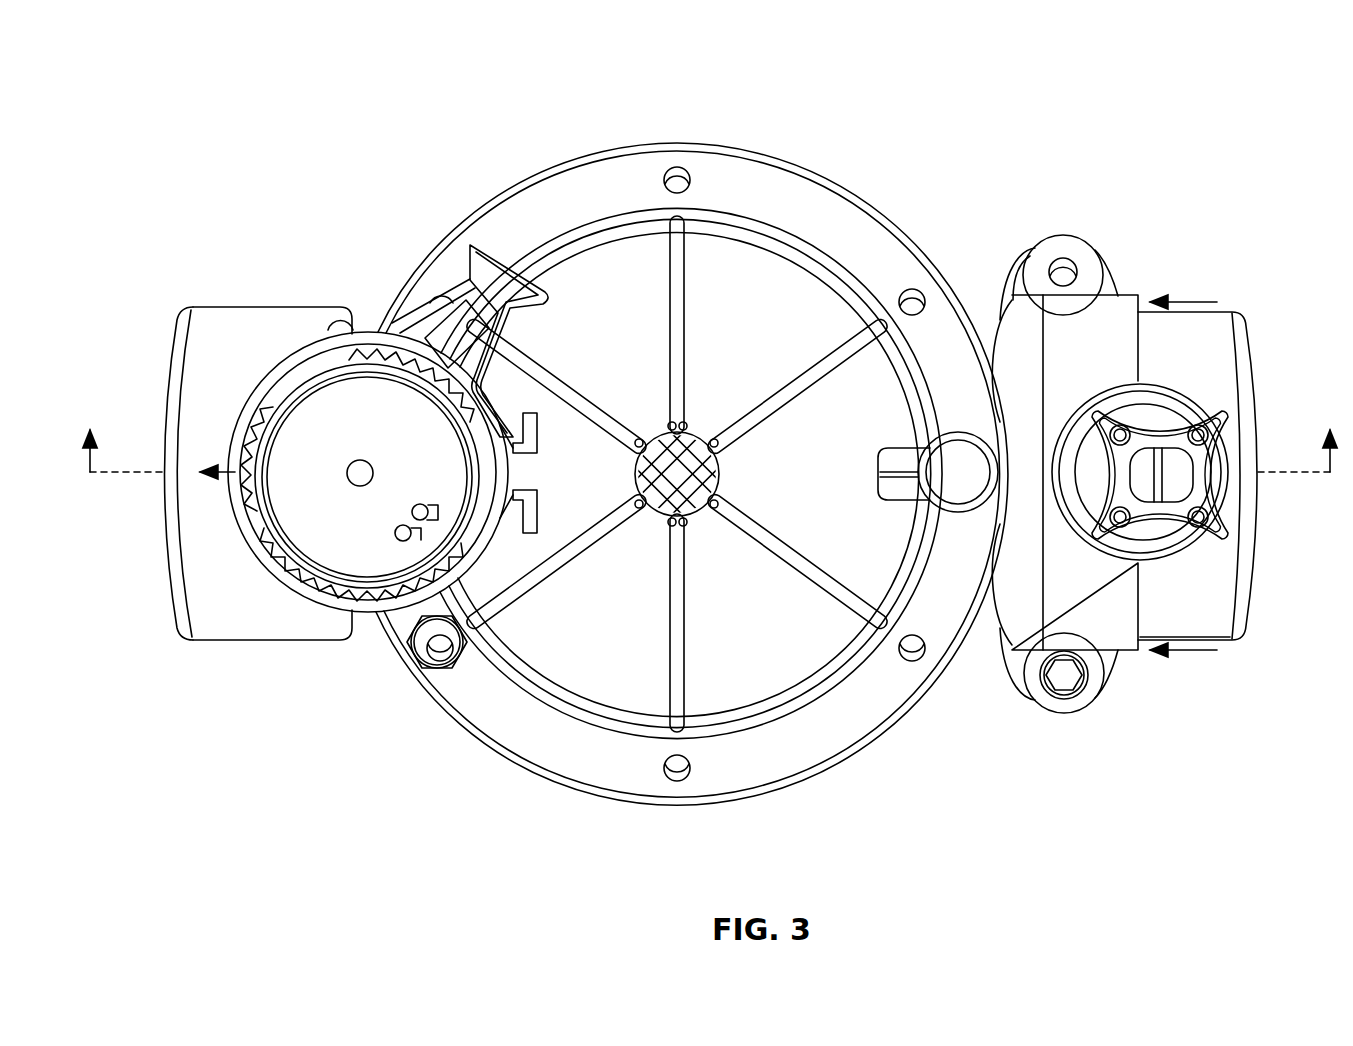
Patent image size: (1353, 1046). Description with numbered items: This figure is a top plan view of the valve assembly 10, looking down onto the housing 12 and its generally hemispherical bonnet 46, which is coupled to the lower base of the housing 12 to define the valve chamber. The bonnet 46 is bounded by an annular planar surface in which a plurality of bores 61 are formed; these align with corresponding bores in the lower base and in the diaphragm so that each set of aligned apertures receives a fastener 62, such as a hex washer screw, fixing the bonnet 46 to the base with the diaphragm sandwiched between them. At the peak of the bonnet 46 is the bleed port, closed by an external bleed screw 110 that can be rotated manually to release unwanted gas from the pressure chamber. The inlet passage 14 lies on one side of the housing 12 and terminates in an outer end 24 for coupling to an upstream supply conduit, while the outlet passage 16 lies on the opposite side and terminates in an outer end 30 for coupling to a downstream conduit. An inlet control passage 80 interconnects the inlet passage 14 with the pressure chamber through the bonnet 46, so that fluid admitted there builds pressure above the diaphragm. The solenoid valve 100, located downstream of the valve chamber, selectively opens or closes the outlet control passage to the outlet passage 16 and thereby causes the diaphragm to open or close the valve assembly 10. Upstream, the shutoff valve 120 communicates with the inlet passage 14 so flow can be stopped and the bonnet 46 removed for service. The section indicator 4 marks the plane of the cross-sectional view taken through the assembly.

The valve assembly 10 is at (183, 105).
The housing 12 is at (846, 768).
The inlet passage 14 is at (1158, 474).
The outlet passage 16 is at (225, 489).
The outer end 24 is at (1250, 634).
The outer end 30 is at (186, 634).
The bonnet 46 is at (800, 290).
The bores 61 is at (681, 168).
The fastener 62 is at (427, 652).
The inlet control passage 80 is at (920, 462).
The solenoid valve 100 is at (366, 330).
The external bleed screw 110 is at (698, 517).
The shutoff valve 120 is at (1162, 398).
The section line 4 is at (711, 426).